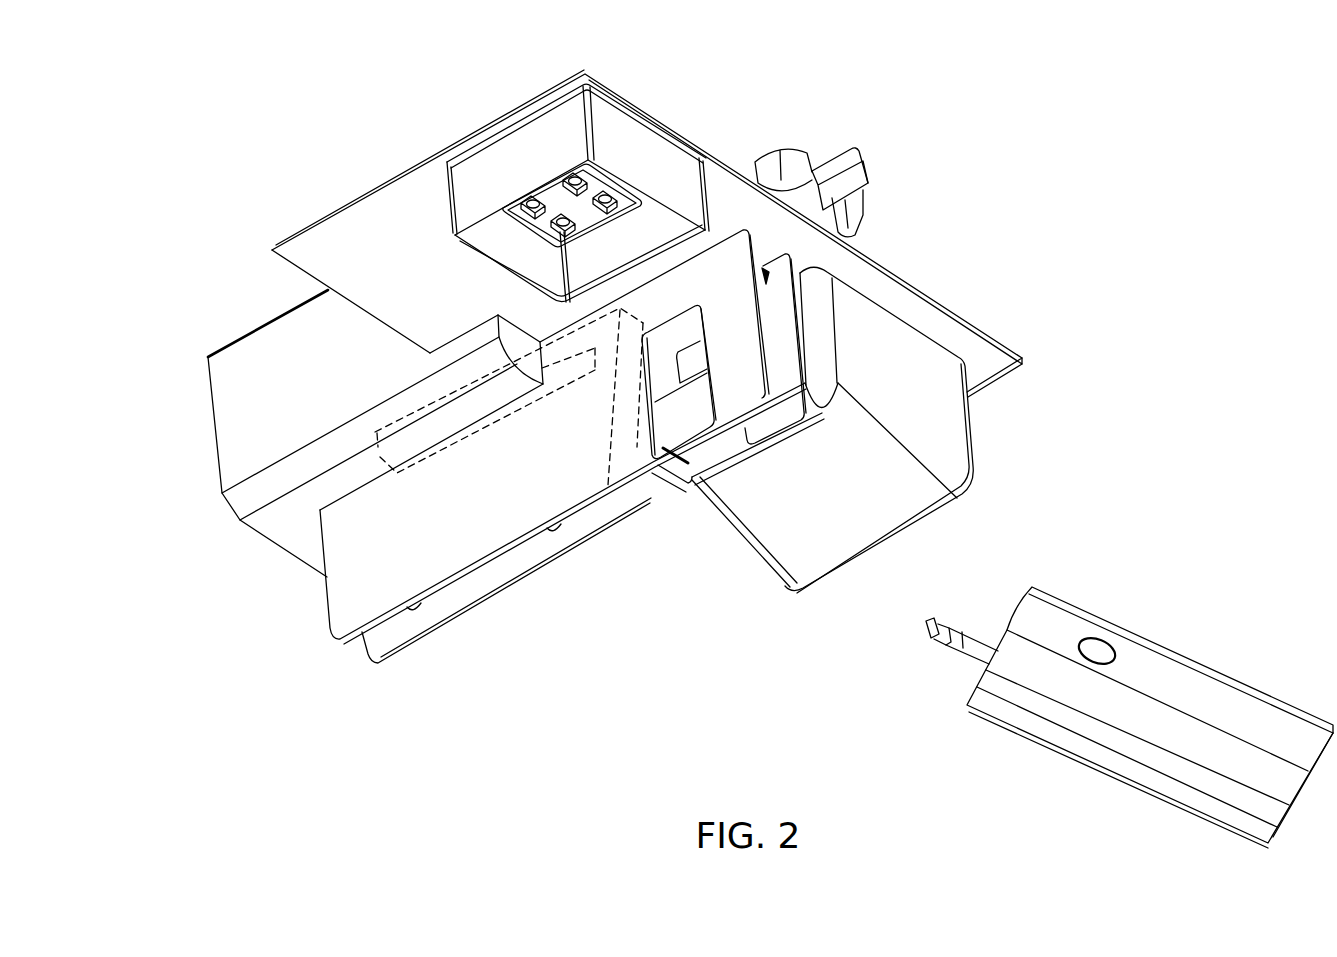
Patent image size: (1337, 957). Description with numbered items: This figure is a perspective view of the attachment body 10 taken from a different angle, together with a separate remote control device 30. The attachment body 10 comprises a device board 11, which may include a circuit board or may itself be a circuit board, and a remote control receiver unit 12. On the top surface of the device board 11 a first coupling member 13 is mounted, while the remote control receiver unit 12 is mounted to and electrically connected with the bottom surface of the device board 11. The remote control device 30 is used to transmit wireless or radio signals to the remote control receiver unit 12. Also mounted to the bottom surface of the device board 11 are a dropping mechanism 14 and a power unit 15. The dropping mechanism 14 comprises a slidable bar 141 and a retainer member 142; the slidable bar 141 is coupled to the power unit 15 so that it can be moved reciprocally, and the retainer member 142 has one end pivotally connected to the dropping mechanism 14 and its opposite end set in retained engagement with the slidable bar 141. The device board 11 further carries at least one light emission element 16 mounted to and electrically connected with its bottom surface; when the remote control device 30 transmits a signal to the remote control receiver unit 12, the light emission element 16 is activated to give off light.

The attachment body 10 is at (1170, 190).
The device board 11 is at (905, 302).
The remote control receiver unit 12 is at (950, 425).
The first coupling member 13 is at (865, 172).
The dropping mechanism 14 is at (350, 598).
The slidable bar 141 is at (650, 487).
The retainer member 142 is at (702, 445).
The power unit 15 is at (237, 375).
The light emission element 16 is at (565, 231).
The remote control device 30 is at (1175, 678).